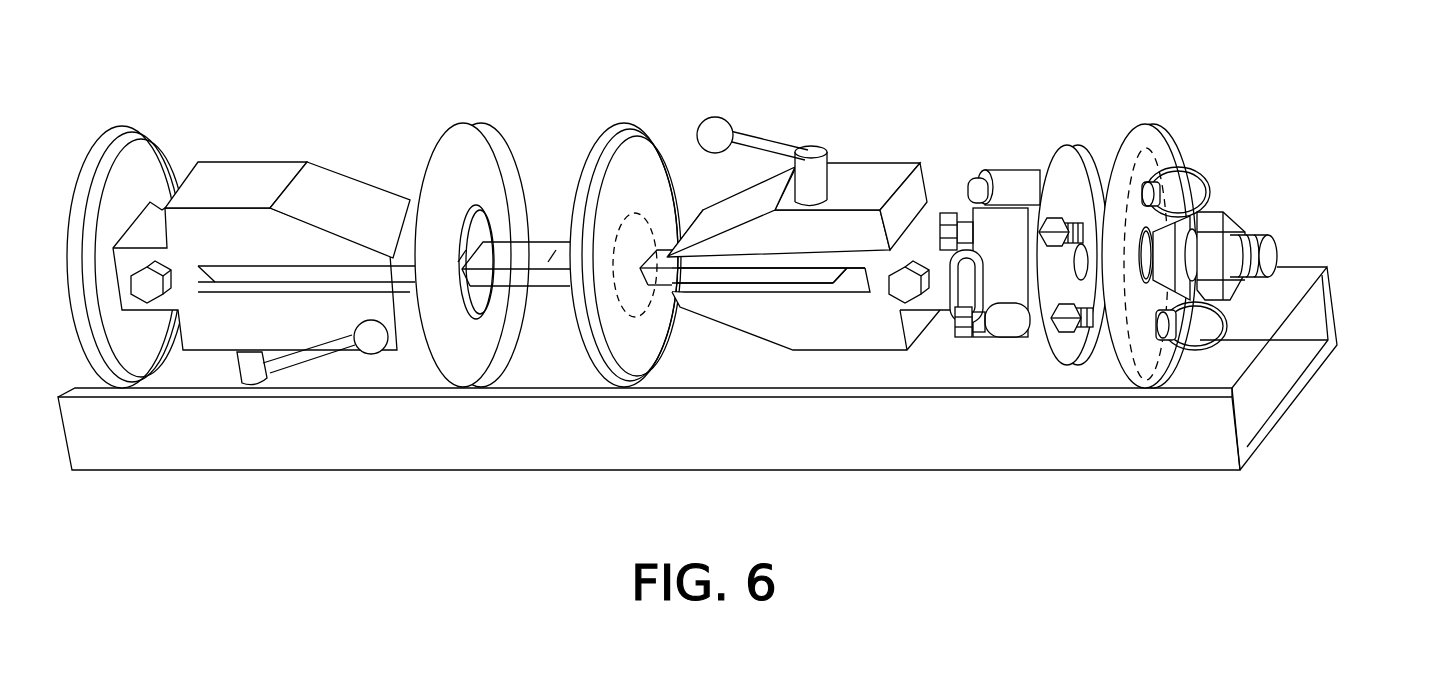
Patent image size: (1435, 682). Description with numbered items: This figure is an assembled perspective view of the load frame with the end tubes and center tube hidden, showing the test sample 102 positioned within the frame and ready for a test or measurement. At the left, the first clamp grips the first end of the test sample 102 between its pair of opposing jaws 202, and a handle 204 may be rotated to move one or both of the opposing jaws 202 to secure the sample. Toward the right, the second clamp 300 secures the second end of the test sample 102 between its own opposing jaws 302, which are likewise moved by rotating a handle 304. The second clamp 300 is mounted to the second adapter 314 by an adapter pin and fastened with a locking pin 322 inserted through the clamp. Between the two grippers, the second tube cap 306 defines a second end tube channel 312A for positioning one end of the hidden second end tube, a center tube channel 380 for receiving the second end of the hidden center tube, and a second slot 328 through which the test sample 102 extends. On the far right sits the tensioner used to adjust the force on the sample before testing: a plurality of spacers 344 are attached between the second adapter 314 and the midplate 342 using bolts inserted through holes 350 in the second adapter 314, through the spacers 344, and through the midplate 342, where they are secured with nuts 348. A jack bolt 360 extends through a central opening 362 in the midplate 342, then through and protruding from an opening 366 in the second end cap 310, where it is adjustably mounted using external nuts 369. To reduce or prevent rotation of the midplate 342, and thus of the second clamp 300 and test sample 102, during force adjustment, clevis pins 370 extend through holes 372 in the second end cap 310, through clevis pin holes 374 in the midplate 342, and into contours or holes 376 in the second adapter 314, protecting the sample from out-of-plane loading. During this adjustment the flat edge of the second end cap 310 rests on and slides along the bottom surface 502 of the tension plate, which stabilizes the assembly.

The test sample 102 is at (541, 287).
The opposing jaws 202 is at (332, 255).
The handle 204 is at (363, 357).
The second clamp 300 is at (865, 176).
The opposing jaws 302 is at (720, 305).
The handle 304 is at (712, 117).
The second tube cap 306 is at (616, 153).
The second end cap 310 is at (1140, 294).
The second end tube channel 312A is at (621, 122).
The second adapter 314 is at (993, 300).
The locking pin 322 is at (900, 303).
The second slot 328 is at (636, 296).
The midplate 342 is at (1082, 165).
The spacers 344 is at (1000, 233).
The nuts 348 is at (1071, 280).
The holes 350 is at (946, 246).
The jack bolt 360 is at (1277, 236).
The central opening 362 is at (1050, 249).
The opening 366 is at (1102, 334).
The external nuts 369 is at (1158, 243).
The clevis pins 370 is at (1192, 170).
The holes 372 is at (1142, 166).
The clevis pin holes 374 is at (1065, 166).
The contours or holes 376 is at (966, 200).
The center tube channel 380 is at (500, 226).
The bottom surface 502 is at (1255, 400).